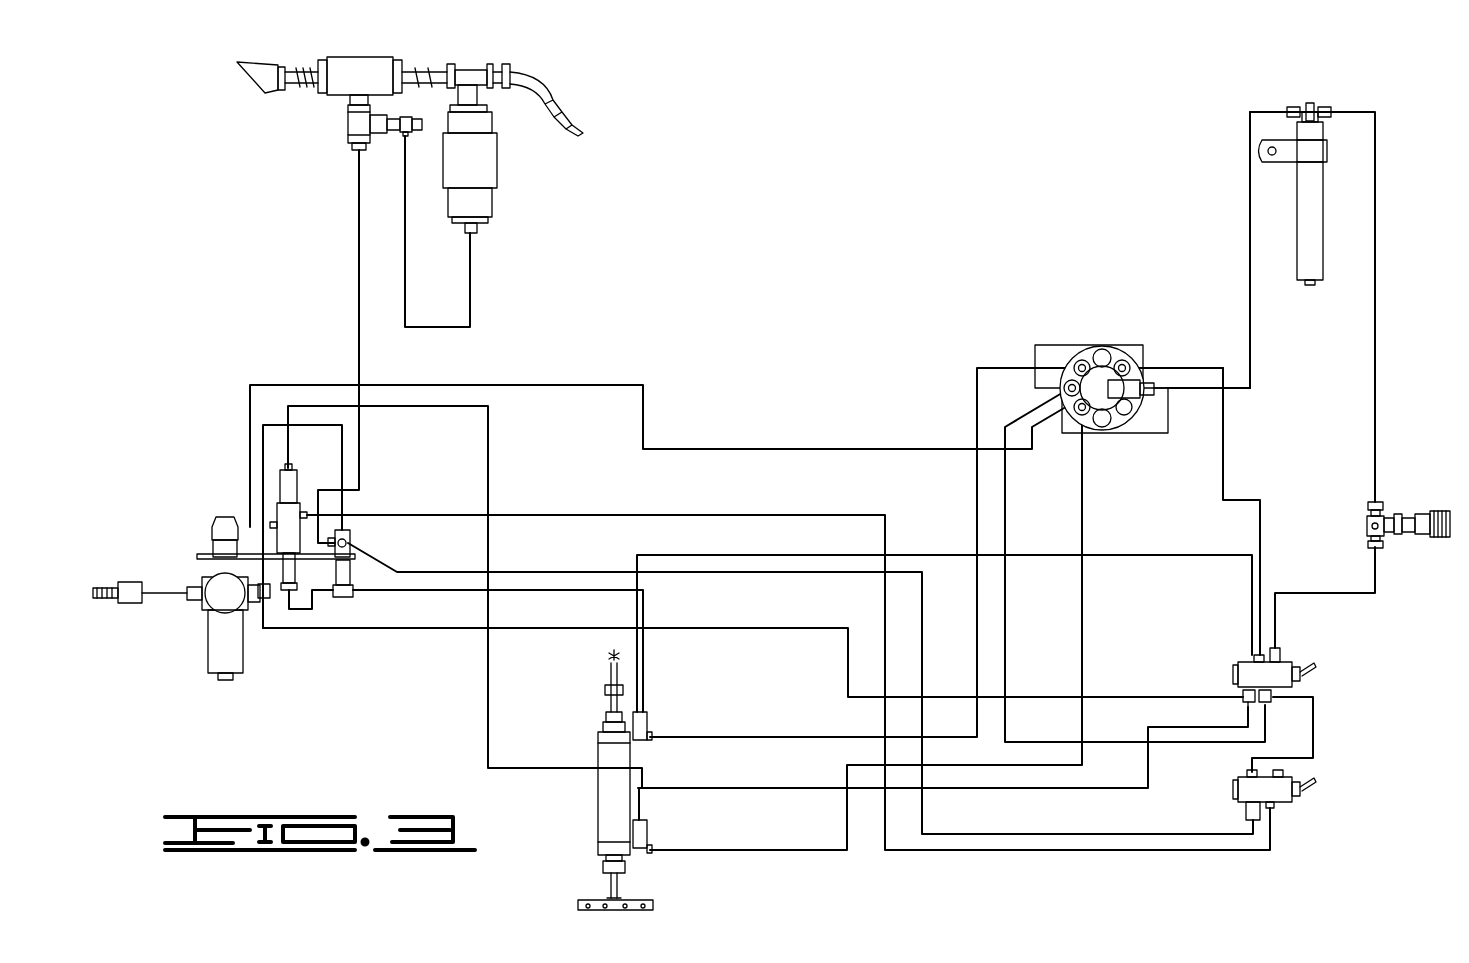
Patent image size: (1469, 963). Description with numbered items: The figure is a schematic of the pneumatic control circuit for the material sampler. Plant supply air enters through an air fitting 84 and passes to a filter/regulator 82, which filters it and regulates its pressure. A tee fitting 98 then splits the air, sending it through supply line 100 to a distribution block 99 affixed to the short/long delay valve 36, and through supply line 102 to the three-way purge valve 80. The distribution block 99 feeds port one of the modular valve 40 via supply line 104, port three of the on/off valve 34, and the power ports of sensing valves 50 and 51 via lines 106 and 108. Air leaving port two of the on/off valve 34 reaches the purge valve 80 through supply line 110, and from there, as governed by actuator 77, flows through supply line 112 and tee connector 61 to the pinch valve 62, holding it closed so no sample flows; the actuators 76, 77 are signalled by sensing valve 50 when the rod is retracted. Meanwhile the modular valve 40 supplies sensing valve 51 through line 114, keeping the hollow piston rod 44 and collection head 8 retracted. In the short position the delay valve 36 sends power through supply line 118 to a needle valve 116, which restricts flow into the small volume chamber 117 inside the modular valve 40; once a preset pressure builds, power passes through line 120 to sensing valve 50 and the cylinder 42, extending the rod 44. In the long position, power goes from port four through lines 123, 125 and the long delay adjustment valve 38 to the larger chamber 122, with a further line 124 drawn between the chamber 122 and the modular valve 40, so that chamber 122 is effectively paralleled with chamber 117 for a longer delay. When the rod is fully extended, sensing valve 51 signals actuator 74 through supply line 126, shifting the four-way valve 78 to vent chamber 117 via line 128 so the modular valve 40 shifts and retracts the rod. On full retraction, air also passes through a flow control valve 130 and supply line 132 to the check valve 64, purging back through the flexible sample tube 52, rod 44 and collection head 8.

The collection head 8 is at (645, 905).
The on/off valve 34 is at (1285, 802).
The short/long delay valve 36 is at (1290, 662).
The long delay adjustment valve 38 is at (1385, 512).
The modular valve 40 is at (1120, 428).
The cylinder 42 is at (600, 746).
The hollow piston rod 44 is at (598, 883).
The sensing valve 50 is at (655, 726).
The sensing valve 51 is at (652, 836).
The flexible sample tube 52 is at (578, 118).
The tee connector 61 is at (350, 127).
The pinch valve 62 is at (345, 88).
The check valve 64 is at (500, 176).
The actuator 74 is at (281, 480).
The actuator 76 is at (298, 570).
The actuator 77 is at (352, 578).
The 4-way valve 78 is at (278, 512).
The 3-way purge valve 80 is at (352, 543).
The filter/regulator 82 is at (210, 637).
The air fitting 84 is at (136, 582).
The tee fitting 98 is at (264, 600).
The distribution block 99 is at (1240, 697).
The supply line 100 is at (330, 629).
The supply line 102 is at (263, 478).
The supply line 104 is at (1275, 728).
The line 106 is at (762, 555).
The line 108 is at (728, 788).
The supply line 110 is at (1013, 834).
The supply line 112 is at (357, 266).
The line 114 is at (762, 851).
The needle valve 116 is at (1122, 358).
The small volume chamber 117 is at (1045, 342).
The supply line 118 is at (1224, 470).
The line 120 is at (975, 394).
The chamber 122 is at (1323, 226).
The line 123 is at (1377, 593).
The line 124 is at (1249, 215).
The line 125 is at (1378, 355).
The supply line 126 is at (492, 462).
The line 128 is at (485, 385).
The flow control valve 130 is at (400, 135).
The supply line 132 is at (470, 290).